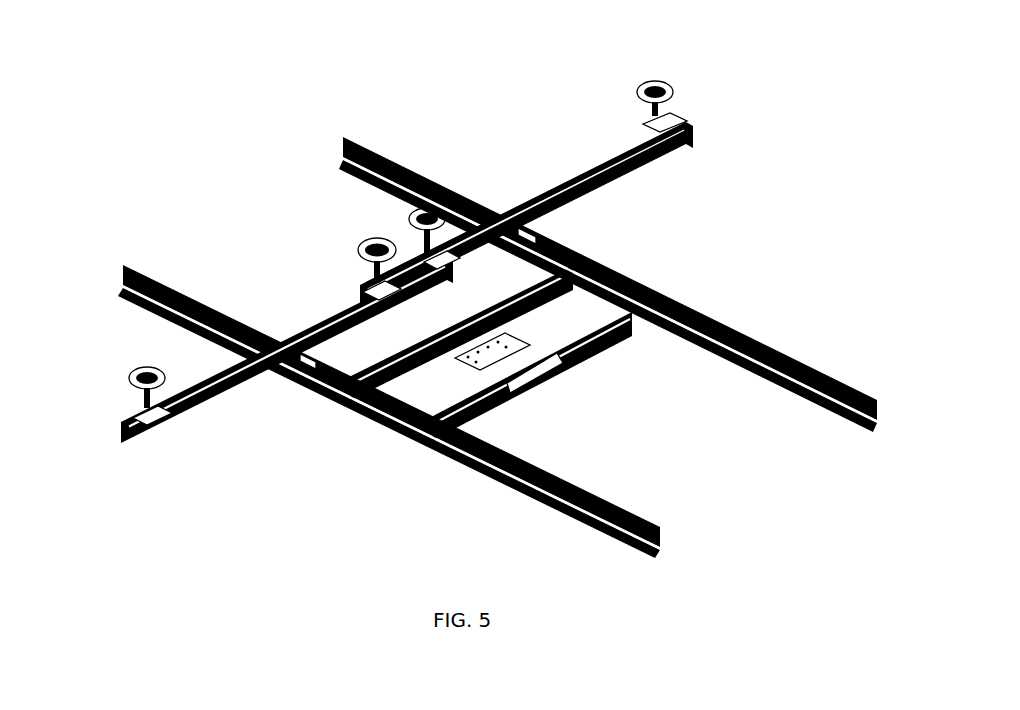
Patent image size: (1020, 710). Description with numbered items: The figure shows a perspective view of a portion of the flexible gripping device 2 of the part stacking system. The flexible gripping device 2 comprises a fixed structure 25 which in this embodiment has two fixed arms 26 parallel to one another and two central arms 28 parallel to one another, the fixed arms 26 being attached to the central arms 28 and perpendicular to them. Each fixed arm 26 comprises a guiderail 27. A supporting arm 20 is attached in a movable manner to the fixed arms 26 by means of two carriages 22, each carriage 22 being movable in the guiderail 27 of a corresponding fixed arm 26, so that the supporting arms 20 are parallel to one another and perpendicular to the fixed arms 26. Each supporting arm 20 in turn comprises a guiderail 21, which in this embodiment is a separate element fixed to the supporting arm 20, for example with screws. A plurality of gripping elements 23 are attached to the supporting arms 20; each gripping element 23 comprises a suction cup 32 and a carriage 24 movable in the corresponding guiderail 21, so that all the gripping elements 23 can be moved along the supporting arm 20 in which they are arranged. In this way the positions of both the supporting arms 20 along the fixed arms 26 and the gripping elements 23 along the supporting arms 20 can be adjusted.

The flexible gripping device 2 is at (483, 62).
The supporting arm 20 is at (632, 170).
The guiderail 21 is at (596, 166).
The carriage 22 is at (546, 238).
The gripping element 23 is at (127, 402).
The carriage 24 is at (690, 130).
The fixed structure 25 is at (627, 276).
The fixed arm 26 is at (787, 383).
The guiderail 27 is at (834, 378).
The central arm 28 is at (530, 414).
The suction cup 32 is at (672, 90).